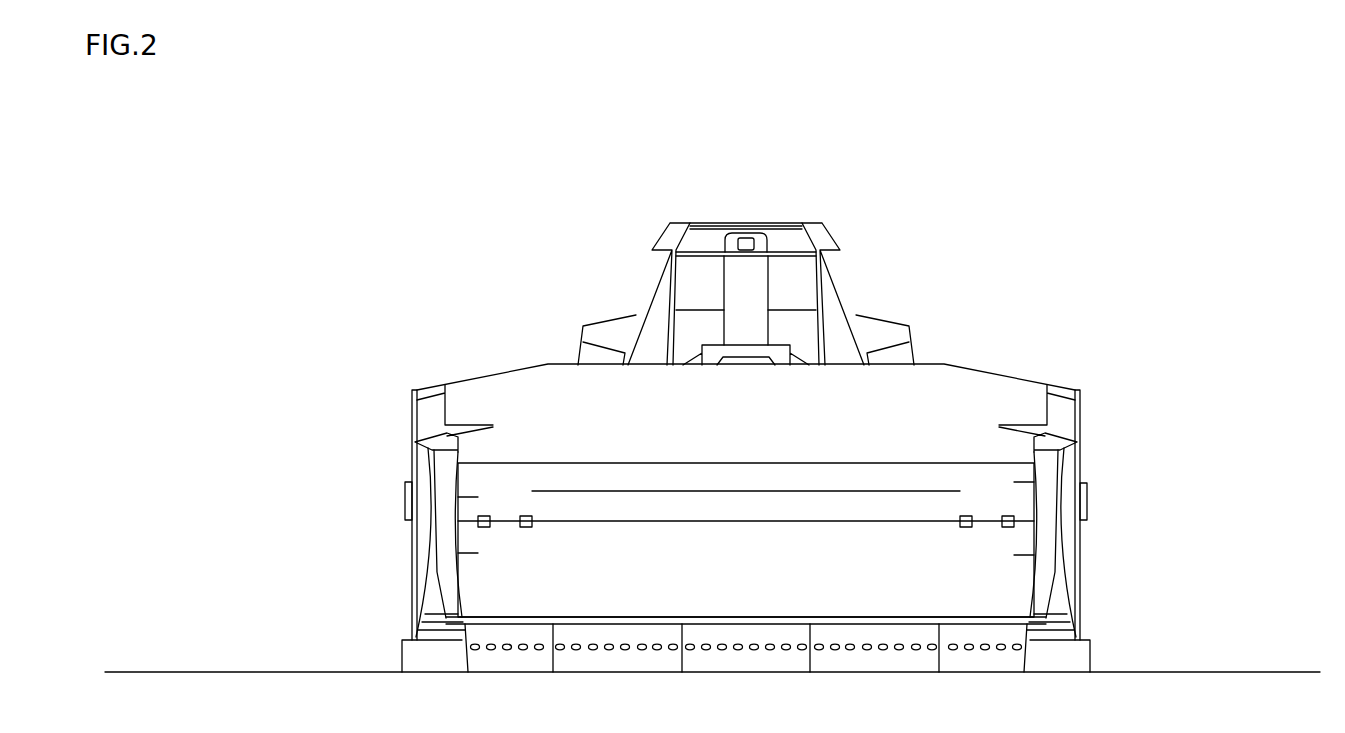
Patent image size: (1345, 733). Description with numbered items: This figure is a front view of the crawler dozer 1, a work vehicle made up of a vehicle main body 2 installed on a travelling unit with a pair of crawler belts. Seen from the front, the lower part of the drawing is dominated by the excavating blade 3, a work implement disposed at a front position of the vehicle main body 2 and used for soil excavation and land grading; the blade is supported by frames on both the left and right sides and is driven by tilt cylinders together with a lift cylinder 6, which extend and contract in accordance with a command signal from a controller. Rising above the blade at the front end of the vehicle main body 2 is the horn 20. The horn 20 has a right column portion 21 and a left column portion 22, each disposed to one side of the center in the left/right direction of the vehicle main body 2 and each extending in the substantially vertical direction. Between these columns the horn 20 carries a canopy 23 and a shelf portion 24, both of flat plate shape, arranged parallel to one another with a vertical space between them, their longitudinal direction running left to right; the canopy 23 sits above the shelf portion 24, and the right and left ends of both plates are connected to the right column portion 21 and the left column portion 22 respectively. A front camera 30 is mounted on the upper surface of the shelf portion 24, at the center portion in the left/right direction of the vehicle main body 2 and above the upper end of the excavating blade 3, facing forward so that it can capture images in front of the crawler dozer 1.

The crawler dozer 1 is at (985, 187).
The vehicle main body 2 is at (884, 330).
The excavating blade 3 is at (993, 410).
The lift cylinder 6 is at (742, 287).
The horn 20 is at (845, 250).
The right column portion 21 is at (660, 270).
The left column portion 22 is at (835, 280).
The canopy 23 is at (777, 226).
The shelf portion 24 is at (800, 250).
The front camera 30 is at (745, 233).